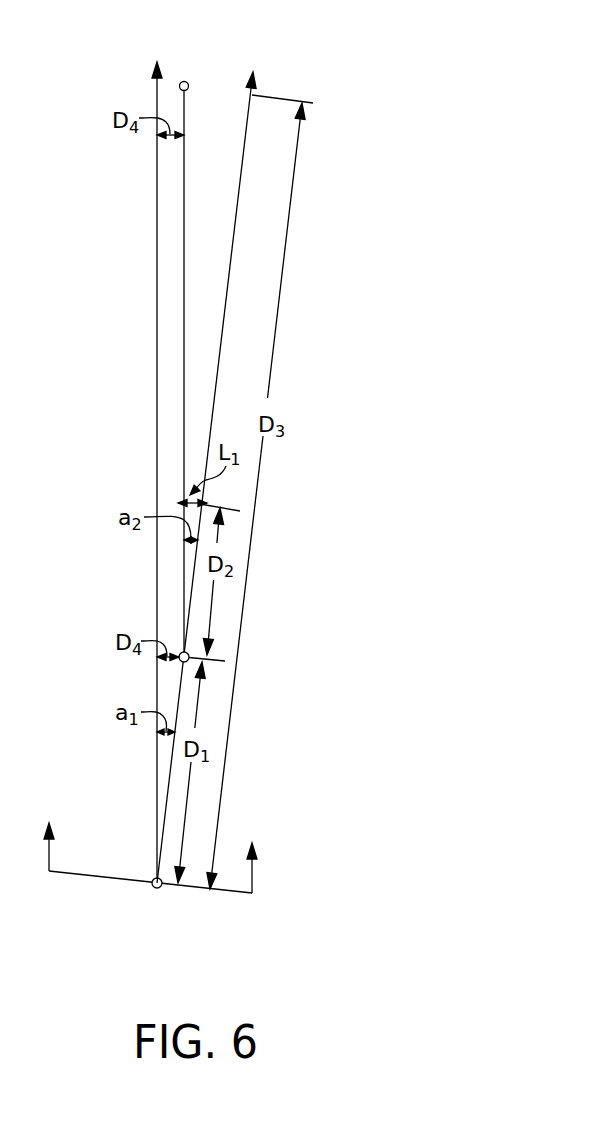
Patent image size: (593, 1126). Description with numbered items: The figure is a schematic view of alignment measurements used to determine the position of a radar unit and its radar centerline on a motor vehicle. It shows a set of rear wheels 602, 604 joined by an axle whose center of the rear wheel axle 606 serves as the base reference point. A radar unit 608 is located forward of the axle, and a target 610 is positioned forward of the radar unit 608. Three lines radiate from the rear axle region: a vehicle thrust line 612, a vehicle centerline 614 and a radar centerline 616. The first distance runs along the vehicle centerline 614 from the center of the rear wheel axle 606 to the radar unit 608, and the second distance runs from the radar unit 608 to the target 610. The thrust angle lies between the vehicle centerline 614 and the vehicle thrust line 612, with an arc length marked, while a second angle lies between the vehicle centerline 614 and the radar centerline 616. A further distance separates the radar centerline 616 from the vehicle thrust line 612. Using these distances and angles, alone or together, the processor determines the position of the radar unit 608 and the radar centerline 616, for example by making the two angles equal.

The rear wheel 602 is at (49, 873).
The rear wheel 604 is at (252, 895).
The center of rear wheel axle 606 is at (157, 889).
The radar unit 608 is at (188, 652).
The target 610 is at (215, 496).
The vehicle thrust line 612 is at (156, 62).
The vehicle centerline 614 is at (253, 71).
The radar centerline 616 is at (186, 82).